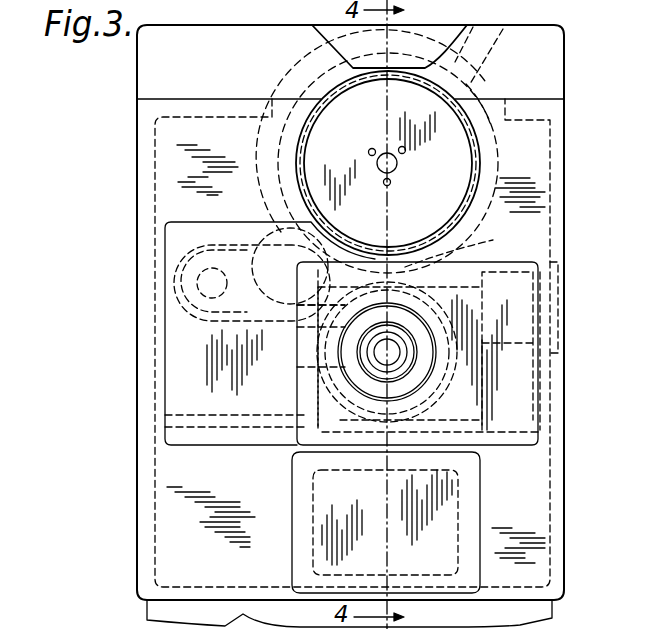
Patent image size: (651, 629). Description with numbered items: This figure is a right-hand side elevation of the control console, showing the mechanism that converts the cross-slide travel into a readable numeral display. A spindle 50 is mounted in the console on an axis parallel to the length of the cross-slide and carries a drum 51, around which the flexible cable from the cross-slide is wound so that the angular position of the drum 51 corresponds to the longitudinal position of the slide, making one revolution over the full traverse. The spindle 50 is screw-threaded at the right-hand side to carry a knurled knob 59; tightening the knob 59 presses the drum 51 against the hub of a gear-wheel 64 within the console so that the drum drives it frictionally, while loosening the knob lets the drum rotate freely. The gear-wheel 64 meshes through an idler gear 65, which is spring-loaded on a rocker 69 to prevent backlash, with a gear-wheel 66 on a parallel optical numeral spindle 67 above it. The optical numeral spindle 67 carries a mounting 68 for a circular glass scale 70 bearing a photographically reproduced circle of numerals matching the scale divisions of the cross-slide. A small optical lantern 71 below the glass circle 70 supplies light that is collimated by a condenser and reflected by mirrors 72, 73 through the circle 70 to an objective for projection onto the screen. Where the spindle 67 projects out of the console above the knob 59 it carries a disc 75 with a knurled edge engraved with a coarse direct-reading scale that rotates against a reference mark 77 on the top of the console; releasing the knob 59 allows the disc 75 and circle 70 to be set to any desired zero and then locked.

The spindle 50 is at (387, 362).
The drum 51 is at (432, 400).
The knurled knob 59 is at (378, 390).
The gear-wheel 64 is at (335, 377).
The idler gear 65 is at (277, 310).
The gear-wheel 66 is at (474, 28).
The optical numeral spindle 67 is at (397, 168).
The mounting 68 is at (516, 24).
The rocker 69 is at (241, 245).
The circular glass scale 70 is at (470, 85).
The optical lantern 71 is at (480, 343).
The mirror 72 is at (440, 285).
The mirror 73 is at (467, 247).
The disc 75 is at (407, 237).
The reference mark 77 is at (388, 68).